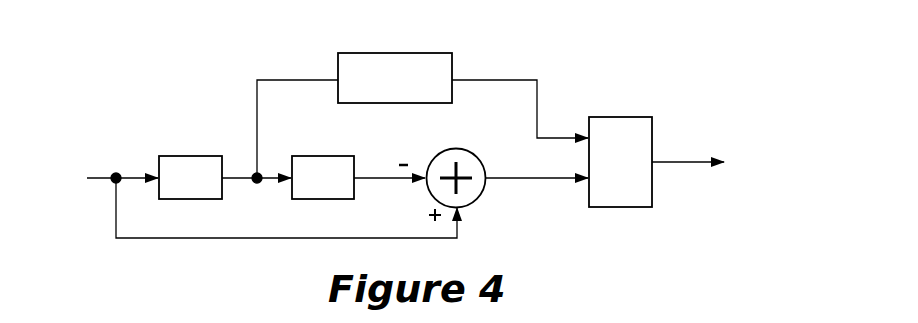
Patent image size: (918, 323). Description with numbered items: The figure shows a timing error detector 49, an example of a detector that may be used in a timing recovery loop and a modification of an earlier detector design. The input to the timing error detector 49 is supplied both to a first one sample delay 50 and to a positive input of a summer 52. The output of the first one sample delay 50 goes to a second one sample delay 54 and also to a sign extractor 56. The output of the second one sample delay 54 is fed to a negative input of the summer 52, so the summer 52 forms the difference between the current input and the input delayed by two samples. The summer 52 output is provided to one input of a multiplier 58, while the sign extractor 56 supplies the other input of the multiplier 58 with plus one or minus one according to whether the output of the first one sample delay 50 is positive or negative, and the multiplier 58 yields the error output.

The timing error detector 49 is at (598, 71).
The first one sample delay 50 is at (215, 156).
The summer 52 is at (472, 149).
The second one sample delay 54 is at (347, 156).
The sign extractor 56 is at (430, 53).
The multiplier 58 is at (642, 117).